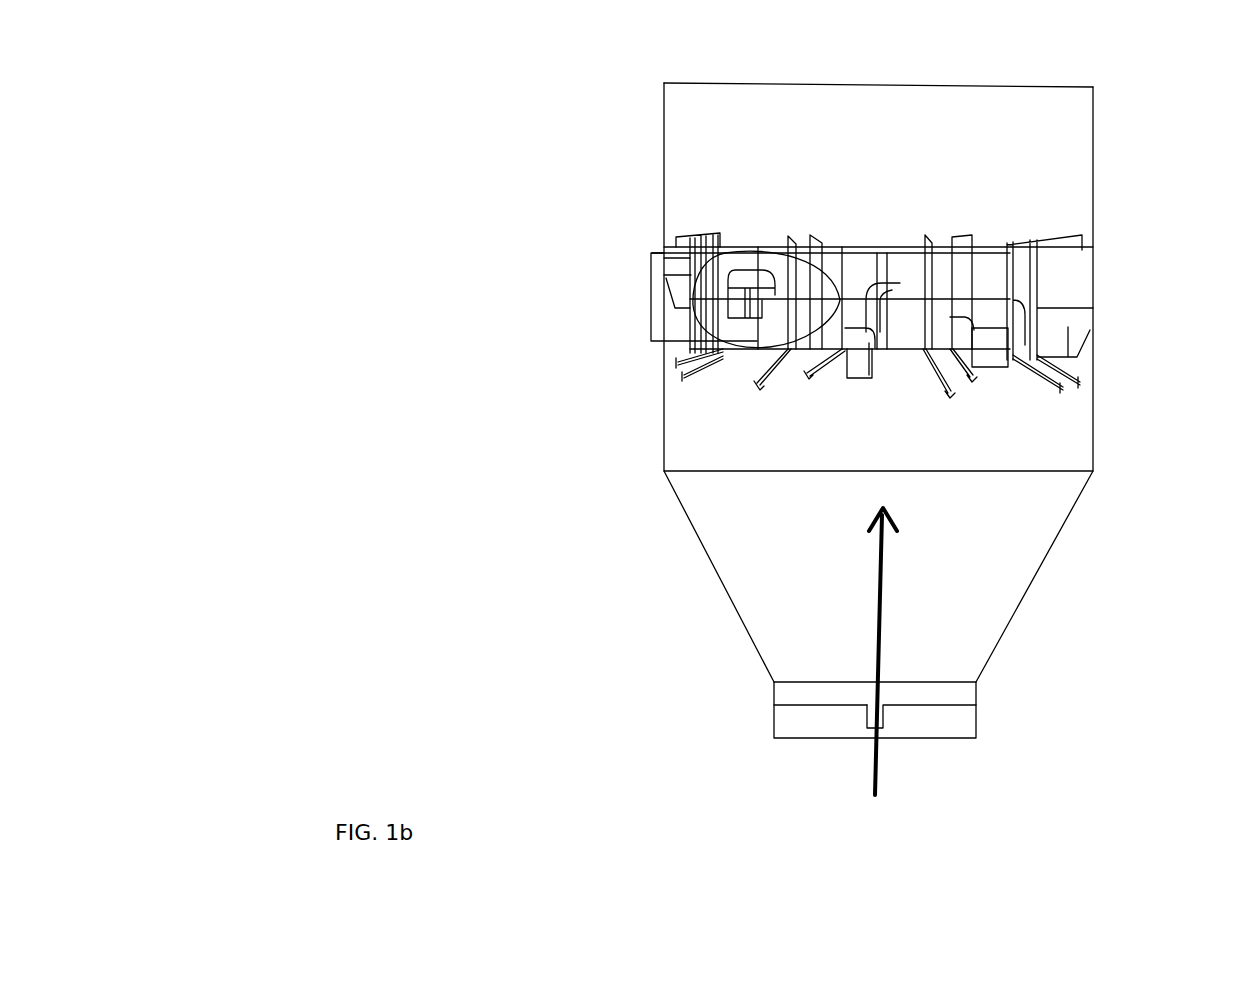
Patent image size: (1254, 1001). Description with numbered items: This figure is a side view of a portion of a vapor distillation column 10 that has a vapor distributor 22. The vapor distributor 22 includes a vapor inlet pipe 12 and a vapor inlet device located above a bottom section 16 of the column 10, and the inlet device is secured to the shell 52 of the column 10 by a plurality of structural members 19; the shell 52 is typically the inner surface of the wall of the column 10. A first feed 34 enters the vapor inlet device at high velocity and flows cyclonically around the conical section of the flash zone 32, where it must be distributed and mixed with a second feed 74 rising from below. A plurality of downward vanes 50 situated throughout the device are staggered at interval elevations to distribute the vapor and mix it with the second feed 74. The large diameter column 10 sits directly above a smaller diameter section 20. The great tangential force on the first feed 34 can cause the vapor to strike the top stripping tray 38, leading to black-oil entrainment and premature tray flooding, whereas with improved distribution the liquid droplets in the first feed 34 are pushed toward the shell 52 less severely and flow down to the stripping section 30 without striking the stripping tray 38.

The vapor distillation column 10 is at (663, 175).
The shell 52 is at (850, 127).
The flash zone 32 is at (862, 188).
The vapor distributor 22 is at (1125, 304).
The first feed 34 is at (636, 298).
The vapor inlet pipe 12 is at (728, 343).
The structural members 19 is at (807, 375).
The downward vanes 50 is at (1005, 367).
The bottom section 16 is at (1029, 625).
The smaller diameter section 20 is at (977, 683).
The stripping section 30 is at (782, 699).
The stripping tray 38 is at (942, 705).
The second feed 74 is at (888, 786).